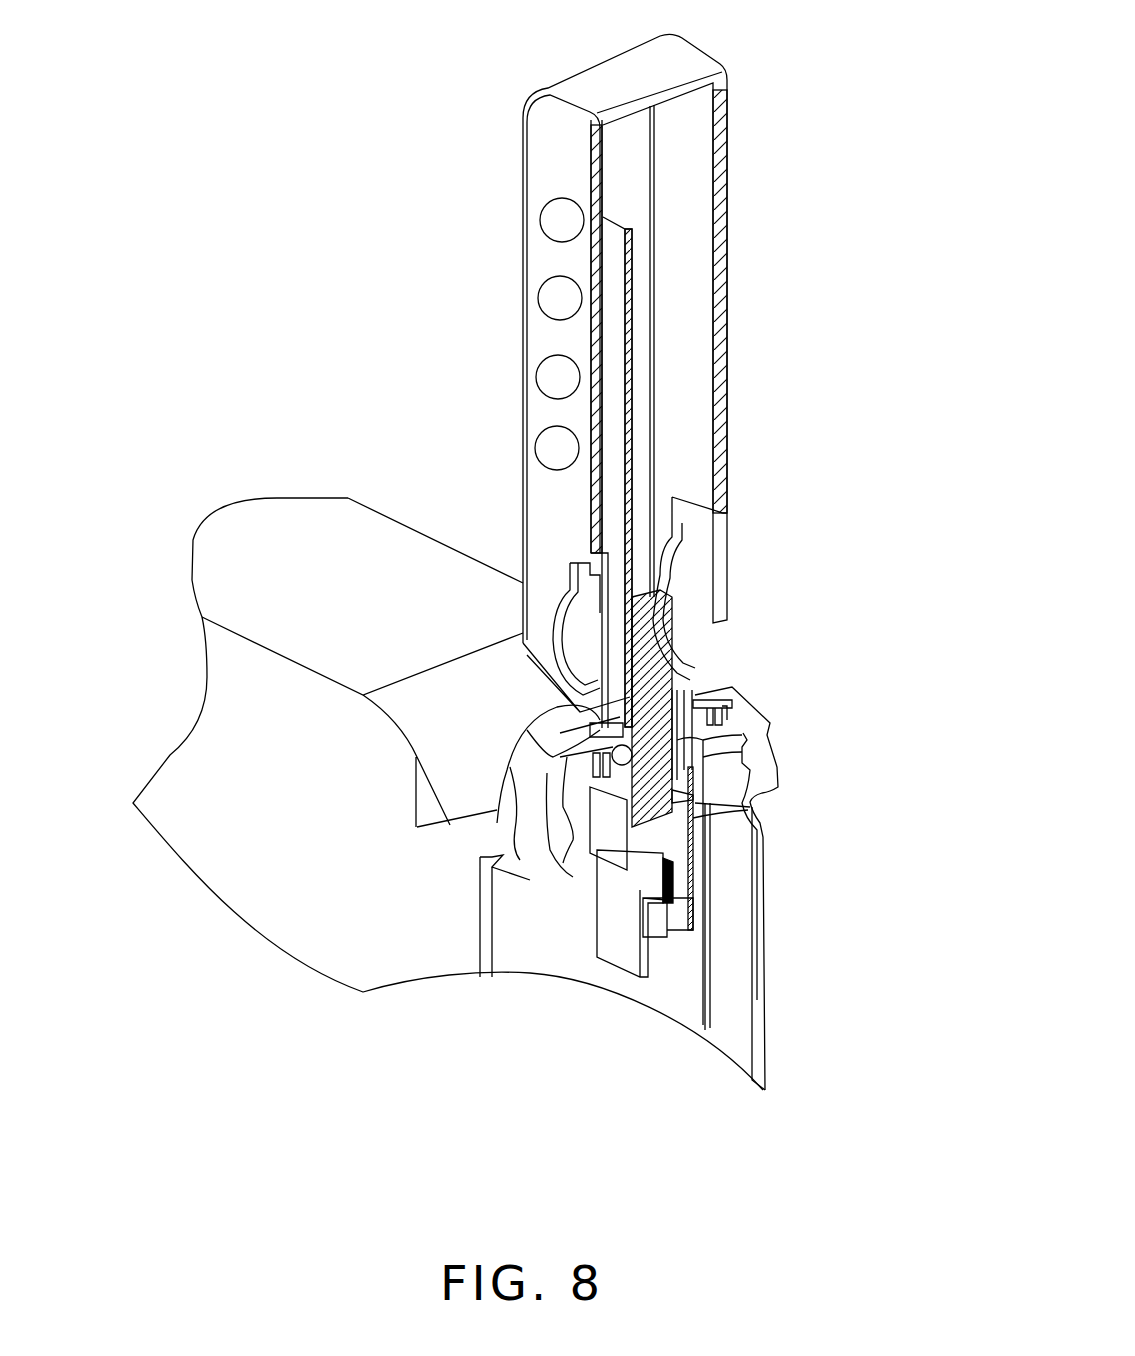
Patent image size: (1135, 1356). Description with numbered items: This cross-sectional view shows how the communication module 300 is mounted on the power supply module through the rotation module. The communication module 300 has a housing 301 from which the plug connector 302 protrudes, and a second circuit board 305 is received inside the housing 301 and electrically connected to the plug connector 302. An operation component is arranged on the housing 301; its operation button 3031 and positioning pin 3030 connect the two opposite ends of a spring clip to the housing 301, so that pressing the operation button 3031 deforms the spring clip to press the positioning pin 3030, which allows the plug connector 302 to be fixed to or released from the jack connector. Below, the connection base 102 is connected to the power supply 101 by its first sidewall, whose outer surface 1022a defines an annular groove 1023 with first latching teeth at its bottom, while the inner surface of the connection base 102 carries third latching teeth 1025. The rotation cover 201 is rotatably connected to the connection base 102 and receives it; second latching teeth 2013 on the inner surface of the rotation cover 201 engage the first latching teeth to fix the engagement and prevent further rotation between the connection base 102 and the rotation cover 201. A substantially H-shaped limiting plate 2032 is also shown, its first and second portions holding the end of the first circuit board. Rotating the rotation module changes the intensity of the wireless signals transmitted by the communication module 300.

The communication module 300 is at (670, 57).
The housing 301 is at (545, 150).
The second circuit board 305 is at (621, 270).
The operation button 3031 is at (582, 637).
The positioning pin 3030 is at (628, 746).
The plug connector 302 is at (652, 777).
The connection base 102 is at (753, 760).
The second latching teeth 2013 is at (758, 797).
The power supply 101 is at (443, 708).
The rotation cover 201 is at (545, 780).
The outer surface 1022a is at (553, 833).
The annular groove 1023 is at (560, 868).
The third latching teeth 1025 is at (566, 850).
The limiting plate 2032 is at (632, 928).